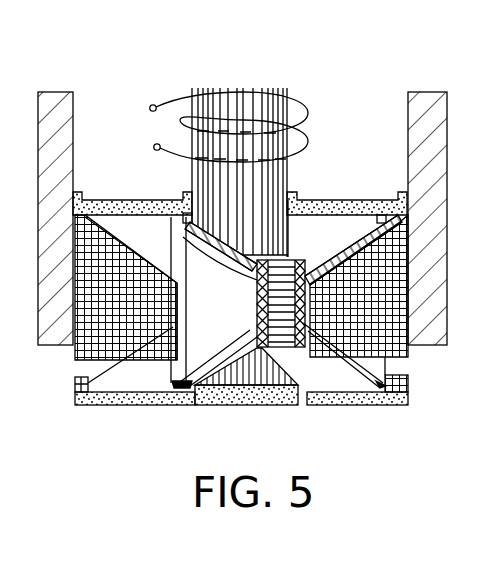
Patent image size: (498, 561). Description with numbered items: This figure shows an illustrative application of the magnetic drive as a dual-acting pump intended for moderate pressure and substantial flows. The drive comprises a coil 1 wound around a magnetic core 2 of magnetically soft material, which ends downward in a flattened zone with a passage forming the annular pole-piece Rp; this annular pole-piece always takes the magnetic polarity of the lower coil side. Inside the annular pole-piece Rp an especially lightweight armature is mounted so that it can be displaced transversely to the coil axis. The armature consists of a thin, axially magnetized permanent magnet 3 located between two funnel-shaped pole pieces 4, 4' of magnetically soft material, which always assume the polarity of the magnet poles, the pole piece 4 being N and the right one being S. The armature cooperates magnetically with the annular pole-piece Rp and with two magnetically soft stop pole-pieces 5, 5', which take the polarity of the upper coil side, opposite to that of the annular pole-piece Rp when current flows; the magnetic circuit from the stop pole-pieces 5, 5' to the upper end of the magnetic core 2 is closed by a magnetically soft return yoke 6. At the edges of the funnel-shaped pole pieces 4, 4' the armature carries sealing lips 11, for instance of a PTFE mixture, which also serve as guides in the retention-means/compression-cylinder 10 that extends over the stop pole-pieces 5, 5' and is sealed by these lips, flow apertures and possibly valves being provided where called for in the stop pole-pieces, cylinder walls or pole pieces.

The coil 1 is at (142, 144).
The magnetic core 2 is at (310, 111).
The permanent magnet 3 is at (292, 348).
The pole piece 4 is at (198, 246).
The pole piece 4' is at (350, 249).
The stop pole-piece 5 is at (126, 287).
The stop pole-piece 5' is at (359, 286).
The return yoke 6 is at (412, 100).
The retention-means/compression-cylinder 10 is at (127, 400).
The sealing lips 11 is at (370, 383).
The north pole N is at (260, 333).
The south pole S is at (352, 323).
The annular pole-piece Rp is at (257, 394).